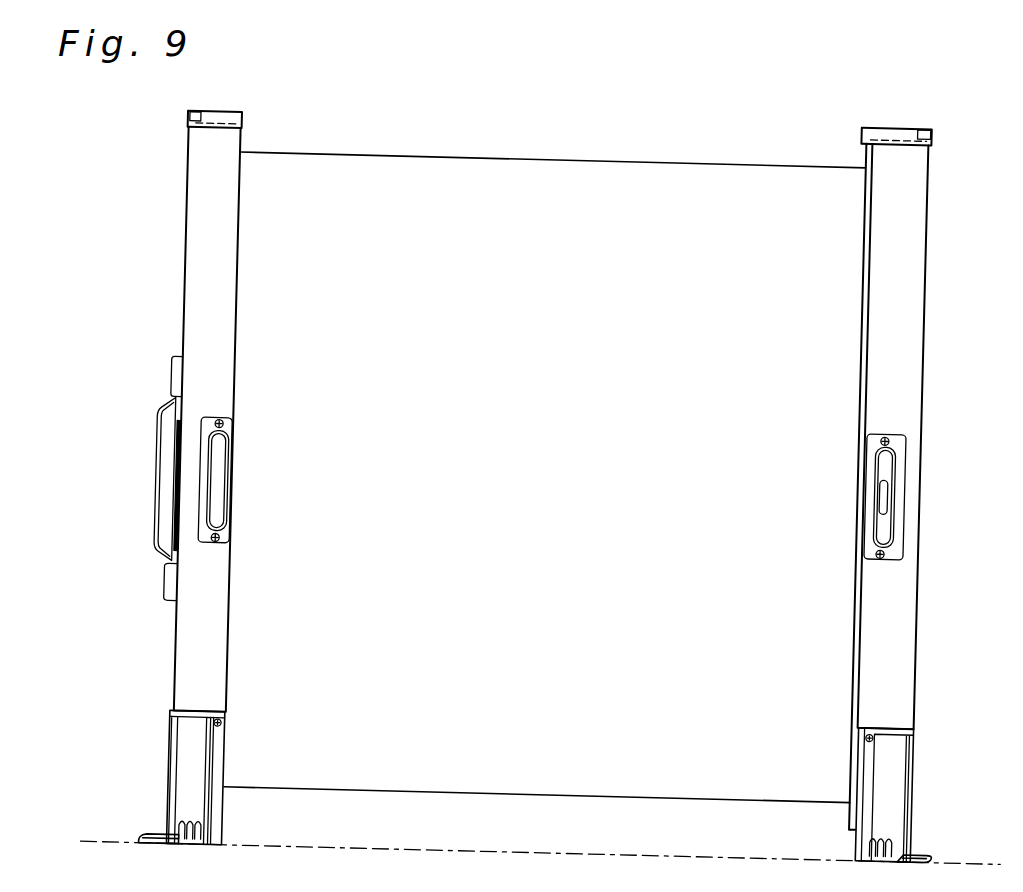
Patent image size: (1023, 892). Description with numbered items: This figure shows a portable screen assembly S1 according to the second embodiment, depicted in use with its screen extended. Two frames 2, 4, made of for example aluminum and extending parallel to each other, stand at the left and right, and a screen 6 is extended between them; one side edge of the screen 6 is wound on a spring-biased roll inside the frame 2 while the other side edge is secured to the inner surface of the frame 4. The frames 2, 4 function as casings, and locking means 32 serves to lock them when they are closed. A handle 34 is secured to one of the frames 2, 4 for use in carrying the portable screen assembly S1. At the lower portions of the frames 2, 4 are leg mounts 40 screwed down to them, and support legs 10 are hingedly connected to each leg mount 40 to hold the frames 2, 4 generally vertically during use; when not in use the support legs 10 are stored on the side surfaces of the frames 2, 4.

The portable screen assembly S1 is at (671, 138).
The frame 2 is at (905, 303).
The frame 4 is at (200, 330).
The screen 6 is at (498, 178).
The support leg 10 is at (168, 838).
The locking means 32 is at (892, 515).
The handle 34 is at (157, 453).
The leg mount 40 is at (185, 752).